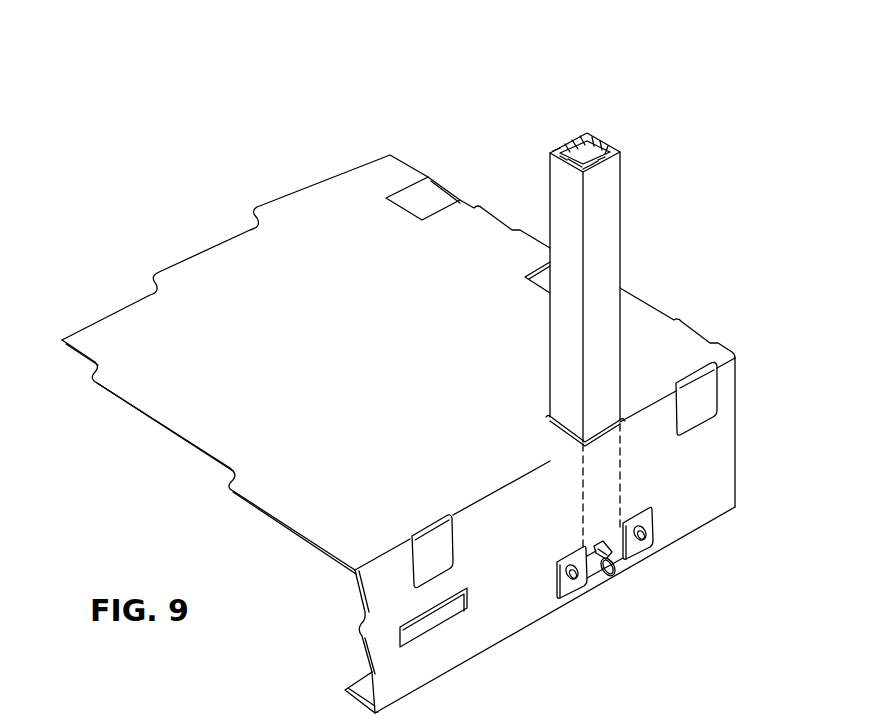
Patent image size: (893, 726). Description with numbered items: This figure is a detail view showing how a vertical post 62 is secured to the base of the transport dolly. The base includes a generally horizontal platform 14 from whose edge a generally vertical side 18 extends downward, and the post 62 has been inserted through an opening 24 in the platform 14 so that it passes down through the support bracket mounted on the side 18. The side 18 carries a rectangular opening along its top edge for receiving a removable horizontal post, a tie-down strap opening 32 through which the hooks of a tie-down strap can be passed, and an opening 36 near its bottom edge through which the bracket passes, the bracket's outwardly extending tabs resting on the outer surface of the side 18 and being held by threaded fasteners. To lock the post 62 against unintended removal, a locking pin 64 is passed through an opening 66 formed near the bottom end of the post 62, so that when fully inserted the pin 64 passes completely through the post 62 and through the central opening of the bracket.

The platform 14 is at (203, 292).
The side 18 is at (707, 477).
The opening 24 is at (570, 428).
The tie-down strap opening 32 is at (452, 608).
The opening 36 is at (607, 532).
The post 62 is at (602, 220).
The locking pin 64 is at (622, 562).
The opening 66 is at (603, 537).